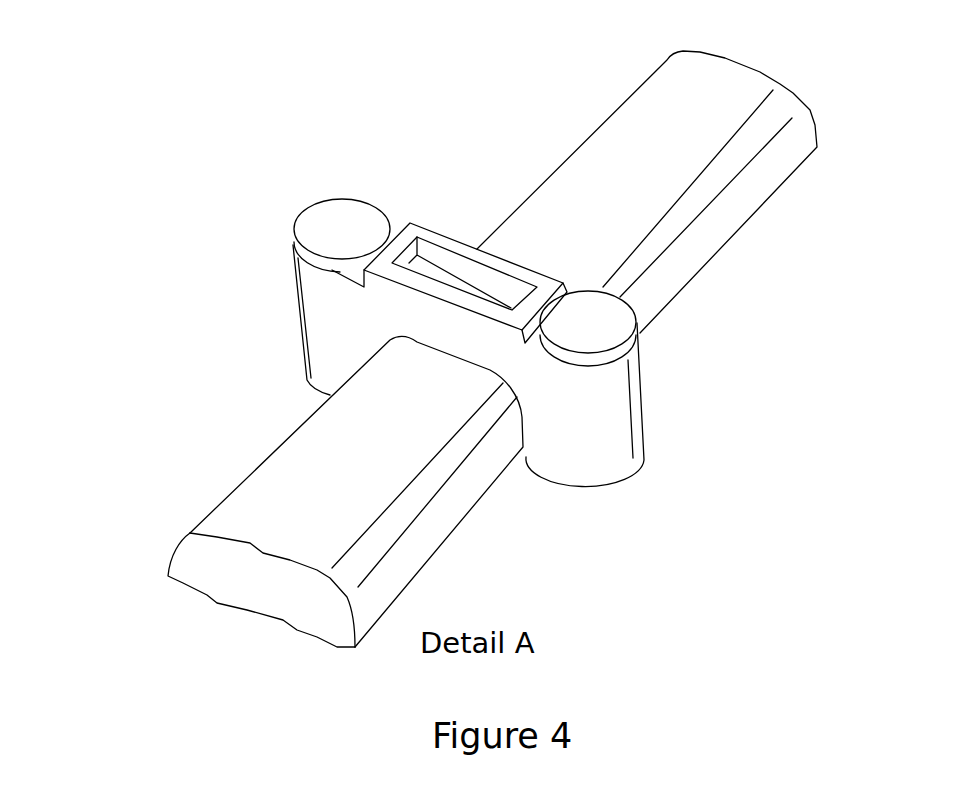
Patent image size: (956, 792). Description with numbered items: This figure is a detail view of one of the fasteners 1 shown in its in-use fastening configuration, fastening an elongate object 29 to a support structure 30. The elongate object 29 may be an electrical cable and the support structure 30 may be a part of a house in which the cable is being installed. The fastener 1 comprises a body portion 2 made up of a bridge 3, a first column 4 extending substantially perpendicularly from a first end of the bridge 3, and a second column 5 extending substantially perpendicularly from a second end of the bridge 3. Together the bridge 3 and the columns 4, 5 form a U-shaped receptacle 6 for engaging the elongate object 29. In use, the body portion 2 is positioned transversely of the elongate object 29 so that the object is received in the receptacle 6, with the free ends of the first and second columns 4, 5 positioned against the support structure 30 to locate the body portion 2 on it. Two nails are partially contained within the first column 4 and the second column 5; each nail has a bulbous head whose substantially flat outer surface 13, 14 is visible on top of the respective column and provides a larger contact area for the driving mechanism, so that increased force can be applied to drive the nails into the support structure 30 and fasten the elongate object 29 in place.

The fastener 1 is at (140, 153).
The body portion 2 is at (430, 223).
The bridge 3 is at (443, 317).
The first column 4 is at (332, 352).
The second column 5 is at (607, 435).
The U-shaped receptacle 6 is at (512, 445).
The flat outer surface 13 is at (322, 233).
The flat outer surface 14 is at (615, 322).
The elongate object 29 is at (573, 183).
The support structure 30 is at (340, 153).